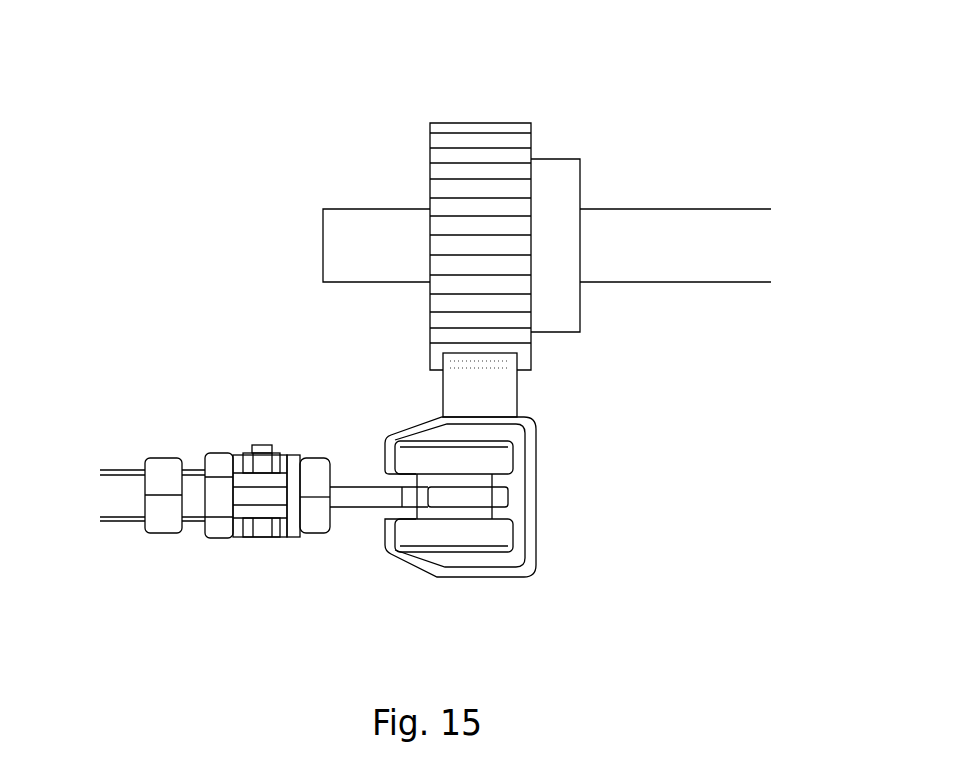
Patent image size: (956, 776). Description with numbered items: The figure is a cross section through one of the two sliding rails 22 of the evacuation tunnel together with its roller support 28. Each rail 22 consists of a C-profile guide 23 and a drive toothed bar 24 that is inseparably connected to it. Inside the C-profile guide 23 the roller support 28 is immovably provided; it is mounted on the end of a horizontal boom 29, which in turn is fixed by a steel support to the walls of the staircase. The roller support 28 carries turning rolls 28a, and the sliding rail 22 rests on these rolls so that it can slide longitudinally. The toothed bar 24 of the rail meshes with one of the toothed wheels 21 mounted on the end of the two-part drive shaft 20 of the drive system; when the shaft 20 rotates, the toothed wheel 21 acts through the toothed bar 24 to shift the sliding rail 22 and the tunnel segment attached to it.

The two-part drive shaft 20 is at (674, 210).
The toothed wheels 21 is at (530, 122).
The sliding rails 22 is at (542, 549).
The C-profile guide 23 is at (520, 577).
The drive toothed bar 24 is at (517, 385).
The roller support 28 is at (351, 522).
The turning rolls 28a is at (494, 534).
The horizontal boom 29 is at (129, 532).